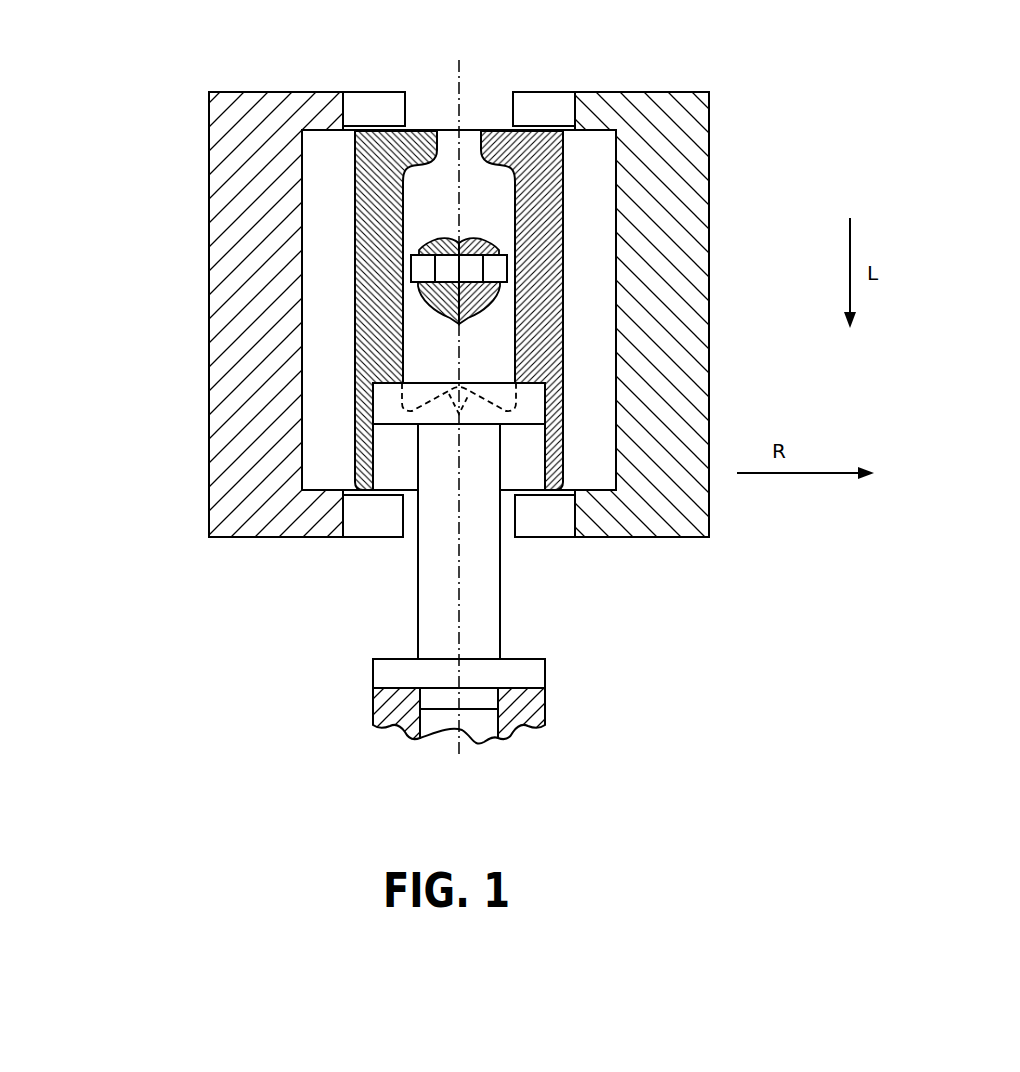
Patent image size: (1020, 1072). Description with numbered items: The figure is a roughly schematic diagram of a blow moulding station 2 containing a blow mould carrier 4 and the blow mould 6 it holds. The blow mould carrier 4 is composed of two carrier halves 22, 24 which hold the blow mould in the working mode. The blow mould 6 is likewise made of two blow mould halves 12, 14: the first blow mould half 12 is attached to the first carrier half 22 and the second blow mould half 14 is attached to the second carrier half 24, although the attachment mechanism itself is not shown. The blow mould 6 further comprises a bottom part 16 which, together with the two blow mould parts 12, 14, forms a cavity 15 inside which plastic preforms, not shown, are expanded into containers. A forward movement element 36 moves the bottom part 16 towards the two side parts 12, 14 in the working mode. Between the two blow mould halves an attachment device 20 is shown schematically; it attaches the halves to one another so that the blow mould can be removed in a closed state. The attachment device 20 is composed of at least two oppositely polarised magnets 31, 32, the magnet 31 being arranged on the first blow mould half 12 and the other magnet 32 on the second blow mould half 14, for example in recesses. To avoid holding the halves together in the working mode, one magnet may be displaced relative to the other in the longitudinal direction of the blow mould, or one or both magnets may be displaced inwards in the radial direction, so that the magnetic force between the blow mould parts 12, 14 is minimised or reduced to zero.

The blow moulding station 2 is at (175, 312).
The blow mould carrier 4 is at (181, 207).
The blow mould 6 is at (328, 204).
The first blow mould half 12 is at (400, 329).
The second blow mould half 14 is at (547, 205).
The cavity 15 is at (492, 345).
The bottom part 16 is at (533, 407).
The attachment device 20 is at (581, 166).
The first carrier half 22 is at (230, 425).
The second carrier half 24 is at (658, 300).
The magnet 31 is at (427, 247).
The magnet 32 is at (493, 247).
The forward movement element 36 is at (502, 609).